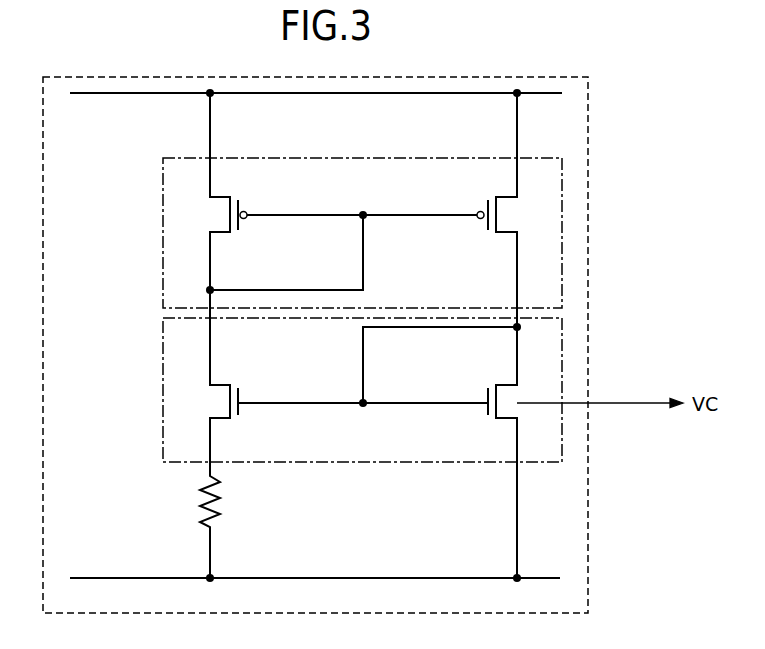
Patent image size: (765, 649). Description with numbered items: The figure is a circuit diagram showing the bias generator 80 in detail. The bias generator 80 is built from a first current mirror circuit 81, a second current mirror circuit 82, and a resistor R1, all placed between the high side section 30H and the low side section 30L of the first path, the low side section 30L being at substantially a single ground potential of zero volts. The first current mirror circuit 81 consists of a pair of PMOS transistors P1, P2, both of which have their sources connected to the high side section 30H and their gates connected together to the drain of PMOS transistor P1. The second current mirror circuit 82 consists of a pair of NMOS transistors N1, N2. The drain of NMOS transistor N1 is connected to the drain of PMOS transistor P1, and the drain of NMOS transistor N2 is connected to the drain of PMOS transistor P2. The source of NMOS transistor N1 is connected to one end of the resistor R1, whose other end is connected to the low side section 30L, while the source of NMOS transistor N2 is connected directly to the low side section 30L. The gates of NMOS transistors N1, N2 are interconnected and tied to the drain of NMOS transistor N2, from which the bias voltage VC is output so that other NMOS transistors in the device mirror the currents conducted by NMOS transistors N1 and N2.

The bias generator 80 is at (588, 150).
The first current mirror circuit 81 is at (163, 233).
The second current mirror circuit 82 is at (163, 392).
The high side section 30H is at (107, 94).
The low side section 30L is at (107, 578).
The PMOS transistor P1 is at (216, 233).
The PMOS transistor P2 is at (498, 233).
The NMOS transistor N1 is at (220, 420).
The NMOS transistor N2 is at (504, 420).
The resistor R1 is at (192, 525).